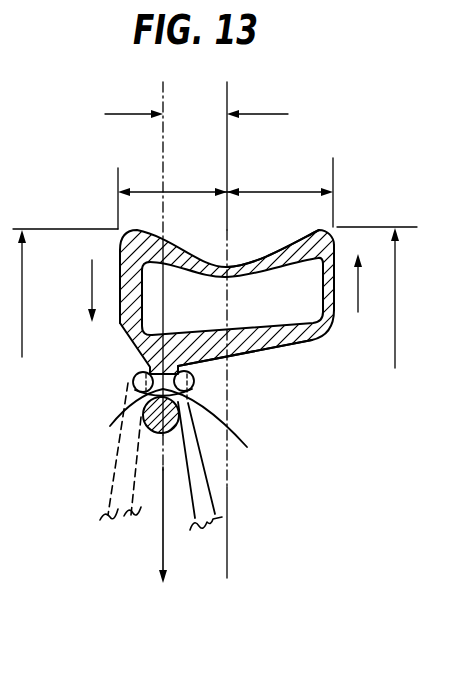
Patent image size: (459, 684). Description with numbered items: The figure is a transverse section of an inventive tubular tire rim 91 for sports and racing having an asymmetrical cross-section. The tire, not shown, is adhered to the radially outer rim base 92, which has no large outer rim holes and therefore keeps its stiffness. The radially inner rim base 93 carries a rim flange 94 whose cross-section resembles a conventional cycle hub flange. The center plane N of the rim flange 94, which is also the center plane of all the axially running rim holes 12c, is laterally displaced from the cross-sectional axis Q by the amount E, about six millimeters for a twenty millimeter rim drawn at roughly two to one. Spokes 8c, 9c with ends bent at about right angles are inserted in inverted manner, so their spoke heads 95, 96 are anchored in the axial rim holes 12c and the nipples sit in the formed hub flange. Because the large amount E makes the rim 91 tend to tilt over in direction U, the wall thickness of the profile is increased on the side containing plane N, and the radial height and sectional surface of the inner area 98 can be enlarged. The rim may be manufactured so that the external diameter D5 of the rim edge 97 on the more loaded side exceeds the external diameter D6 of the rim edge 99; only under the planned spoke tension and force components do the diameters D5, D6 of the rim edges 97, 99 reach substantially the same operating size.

The tubular tire rim 91 is at (89, 172).
The radially outer rim base 92 is at (262, 258).
The radially inner rim base 93 is at (243, 353).
The rim flange 94 is at (147, 437).
The spoke head 95 is at (137, 380).
The spoke head 96 is at (218, 434).
The rim edge 97 is at (128, 310).
The inner area 98 is at (258, 300).
The rim edge 99 is at (327, 303).
The rim holes 12c is at (143, 407).
The spoke 8c is at (205, 497).
The spoke 9c is at (117, 514).
The center plane of rim holes N is at (163, 100).
The cross-sectional axis Q is at (230, 90).
The displacement amount E is at (146, 115).
The tilting direction U is at (225, 286).
The external diameter of rim edge 97 D5 is at (20, 315).
The external diameter of rim edge 99 D6 is at (408, 298).